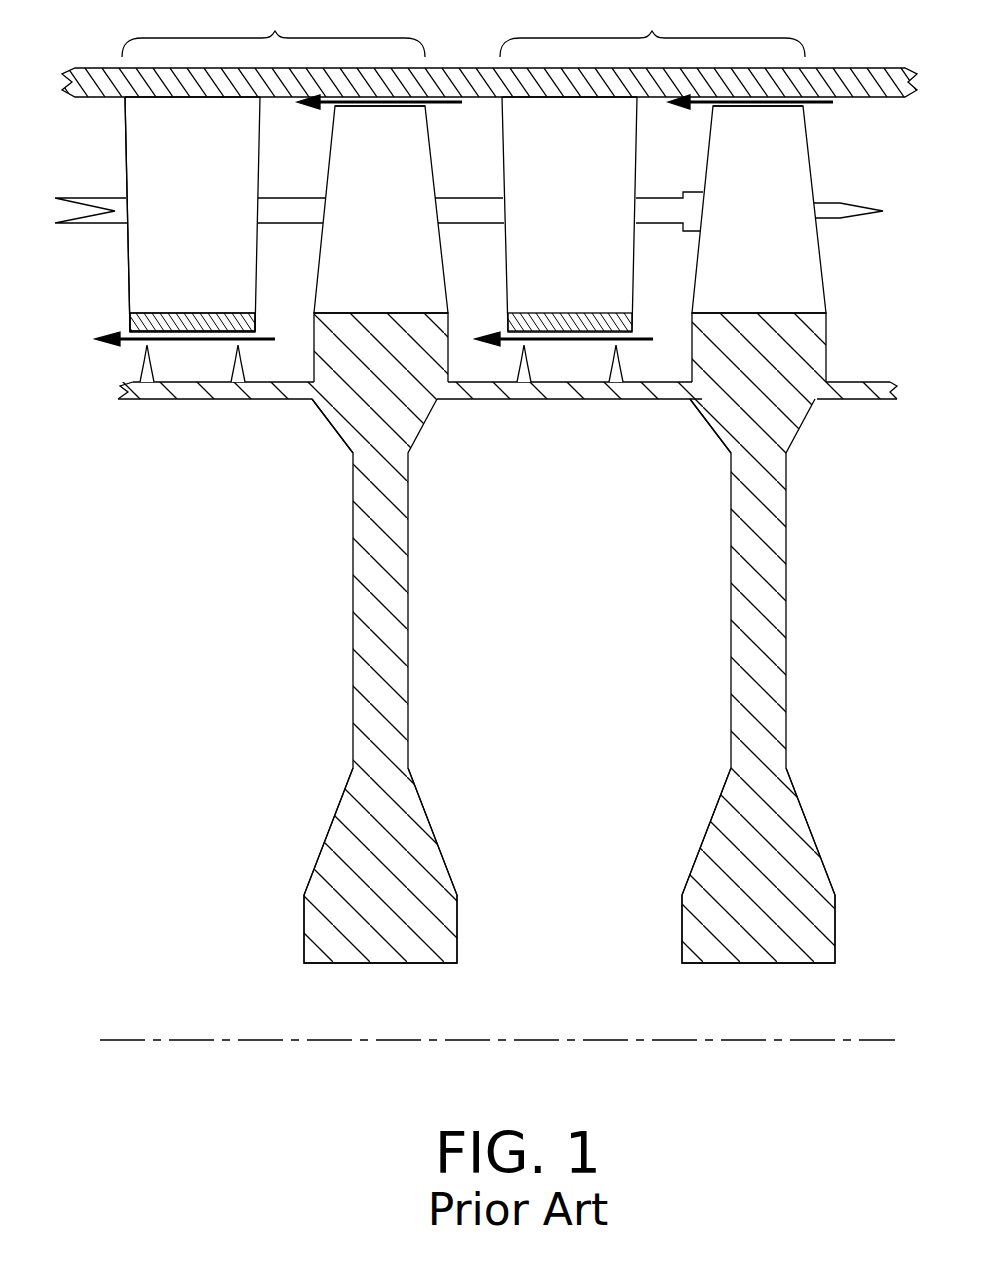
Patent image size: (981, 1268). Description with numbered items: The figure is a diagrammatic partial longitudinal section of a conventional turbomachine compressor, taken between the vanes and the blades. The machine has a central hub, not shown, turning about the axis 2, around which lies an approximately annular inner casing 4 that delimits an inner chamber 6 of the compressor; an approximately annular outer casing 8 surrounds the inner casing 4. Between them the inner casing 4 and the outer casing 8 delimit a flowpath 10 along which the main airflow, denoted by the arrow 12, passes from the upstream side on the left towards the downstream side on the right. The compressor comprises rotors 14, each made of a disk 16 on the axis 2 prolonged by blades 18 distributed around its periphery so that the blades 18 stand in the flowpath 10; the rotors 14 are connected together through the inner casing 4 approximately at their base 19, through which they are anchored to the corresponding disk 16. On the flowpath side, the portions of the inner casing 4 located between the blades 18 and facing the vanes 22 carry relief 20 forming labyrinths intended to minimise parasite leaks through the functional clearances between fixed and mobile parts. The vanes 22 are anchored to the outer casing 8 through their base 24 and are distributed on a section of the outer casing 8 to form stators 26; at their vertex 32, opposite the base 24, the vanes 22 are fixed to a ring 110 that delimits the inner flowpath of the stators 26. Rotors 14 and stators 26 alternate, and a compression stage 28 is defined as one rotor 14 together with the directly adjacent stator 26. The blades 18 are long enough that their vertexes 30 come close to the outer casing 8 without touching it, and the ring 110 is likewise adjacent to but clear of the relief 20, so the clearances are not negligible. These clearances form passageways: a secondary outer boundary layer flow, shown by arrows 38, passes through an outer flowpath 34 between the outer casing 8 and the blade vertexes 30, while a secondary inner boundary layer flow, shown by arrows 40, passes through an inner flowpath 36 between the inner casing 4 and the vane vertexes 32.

The axis 2 is at (845, 1040).
The inner casing 4 is at (868, 400).
The inner chamber 6 is at (220, 582).
The outer casing 8 is at (865, 78).
The flowpath 10 is at (856, 322).
The main airflow arrow 12 is at (843, 219).
The rotor 14 is at (409, 730).
The disk 16 is at (437, 842).
The blade 18 is at (398, 301).
The base 19 is at (356, 436).
The relief 20 is at (210, 372).
The vane 22 is at (143, 227).
The base 24 is at (215, 98).
The stator 26 is at (126, 155).
The compression stage 28 is at (463, 28).
The vertex 30 is at (373, 108).
The vertex 32 is at (205, 326).
The outer flowpath 34 is at (327, 110).
The inner flowpath 36 is at (140, 352).
The secondary outer boundary layer flow 38 is at (450, 105).
The secondary inner boundary layer flow 40 is at (263, 337).
The ring 110 is at (148, 318).